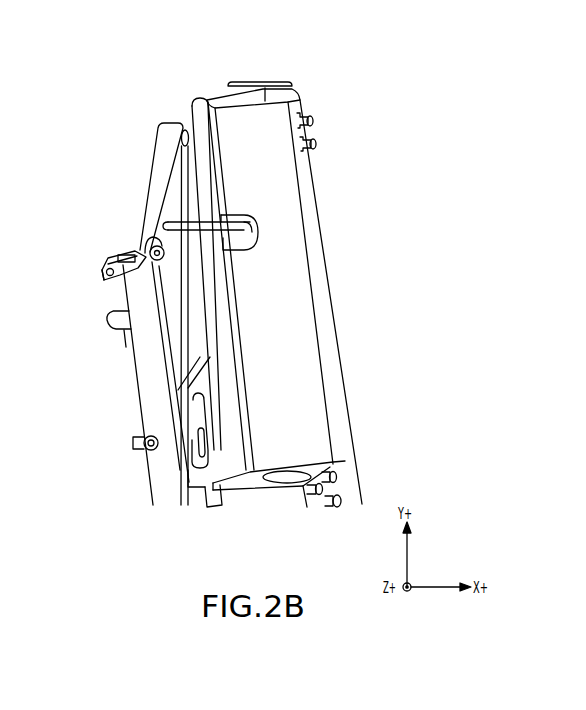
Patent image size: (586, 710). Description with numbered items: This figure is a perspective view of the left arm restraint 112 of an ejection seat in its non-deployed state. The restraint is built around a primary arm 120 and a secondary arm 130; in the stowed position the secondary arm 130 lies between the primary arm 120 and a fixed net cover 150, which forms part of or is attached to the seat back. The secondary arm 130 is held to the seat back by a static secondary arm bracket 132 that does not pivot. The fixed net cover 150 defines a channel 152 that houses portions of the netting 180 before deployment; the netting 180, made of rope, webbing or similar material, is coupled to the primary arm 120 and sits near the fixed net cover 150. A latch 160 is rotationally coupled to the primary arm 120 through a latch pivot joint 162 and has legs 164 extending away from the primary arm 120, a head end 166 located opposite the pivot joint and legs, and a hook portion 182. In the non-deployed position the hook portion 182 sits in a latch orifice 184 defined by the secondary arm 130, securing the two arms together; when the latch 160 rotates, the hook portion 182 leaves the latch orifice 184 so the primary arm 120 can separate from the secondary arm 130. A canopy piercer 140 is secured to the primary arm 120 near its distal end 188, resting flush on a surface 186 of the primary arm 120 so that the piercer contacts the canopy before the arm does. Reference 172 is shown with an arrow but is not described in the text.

The left arm restraint 112 is at (333, 68).
The primary arm 120 is at (147, 377).
The secondary arm 130 is at (191, 112).
The secondary arm bracket 132 is at (328, 465).
The canopy piercer 140 is at (160, 259).
The fixed net cover 150 is at (322, 304).
The channel 152 is at (283, 83).
The latch 160 is at (113, 273).
The latch pivot joint 162 is at (148, 448).
The legs 164 is at (137, 440).
The head end 166 is at (111, 258).
The direction arrow 172 is at (362, 88).
The netting 180 is at (225, 214).
The hook portion 182 is at (201, 452).
The latch orifice 184 is at (208, 407).
The surface 186 is at (144, 238).
The distal end 188 is at (159, 160).